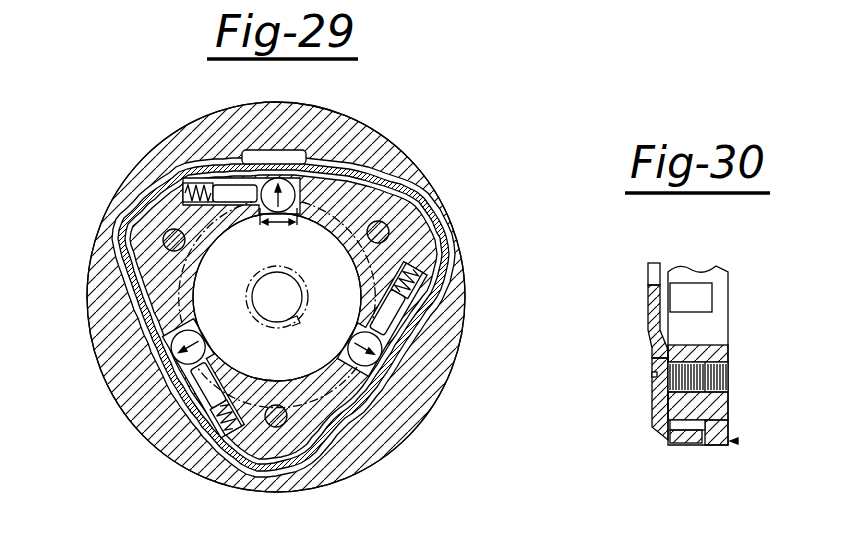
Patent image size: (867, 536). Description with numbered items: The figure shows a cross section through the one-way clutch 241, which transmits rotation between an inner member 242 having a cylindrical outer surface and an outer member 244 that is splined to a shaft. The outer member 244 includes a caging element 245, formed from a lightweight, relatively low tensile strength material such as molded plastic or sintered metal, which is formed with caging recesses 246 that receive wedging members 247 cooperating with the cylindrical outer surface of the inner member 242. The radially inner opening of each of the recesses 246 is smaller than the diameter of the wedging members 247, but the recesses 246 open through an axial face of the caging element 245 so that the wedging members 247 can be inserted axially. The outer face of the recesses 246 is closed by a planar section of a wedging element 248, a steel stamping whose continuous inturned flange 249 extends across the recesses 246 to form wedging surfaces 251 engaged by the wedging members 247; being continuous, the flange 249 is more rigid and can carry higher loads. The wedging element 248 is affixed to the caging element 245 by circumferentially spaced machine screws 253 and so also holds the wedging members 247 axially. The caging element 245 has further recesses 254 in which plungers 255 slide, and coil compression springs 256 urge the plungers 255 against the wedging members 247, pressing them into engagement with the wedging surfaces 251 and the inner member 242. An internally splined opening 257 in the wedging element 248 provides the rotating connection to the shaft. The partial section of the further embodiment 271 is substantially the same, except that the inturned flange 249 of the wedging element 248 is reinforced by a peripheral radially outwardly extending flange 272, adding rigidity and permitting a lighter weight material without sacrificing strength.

In FIG. 29, the one-way clutch 241 is at (417, 146).
In FIG. 29, the inner member 242 is at (178, 292).
In FIG. 29, the outer member 244 is at (297, 150).
In FIG. 30, the outer member 244 is at (736, 444).
In FIG. 29, the caging element 245 is at (398, 444).
In FIG. 29, the caging recesses 246 is at (226, 178).
In FIG. 30, the caging recesses 246 is at (698, 288).
In FIG. 29, the wedging members 247 is at (172, 357).
In FIG. 29, the wedging element 248 is at (328, 452).
In FIG. 30, the wedging element 248 is at (660, 430).
In FIG. 29, the inturned flange 249 is at (167, 362).
In FIG. 30, the inturned flange 249 is at (694, 432).
In FIG. 29, the wedging surfaces 251 is at (416, 362).
In FIG. 29, the machine screws 253 is at (389, 229).
In FIG. 30, the machine screws 253 is at (652, 372).
In FIG. 29, the recesses 254 is at (185, 181).
In FIG. 29, the plungers 255 is at (200, 183).
In FIG. 29, the coil compression springs 256 is at (167, 180).
In FIG. 30, the internally splined opening 257 is at (648, 280).
In FIG. 30, the another embodiment 271 is at (797, 252).
In FIG. 30, the peripheral radially outwardly extending flange 272 is at (697, 446).